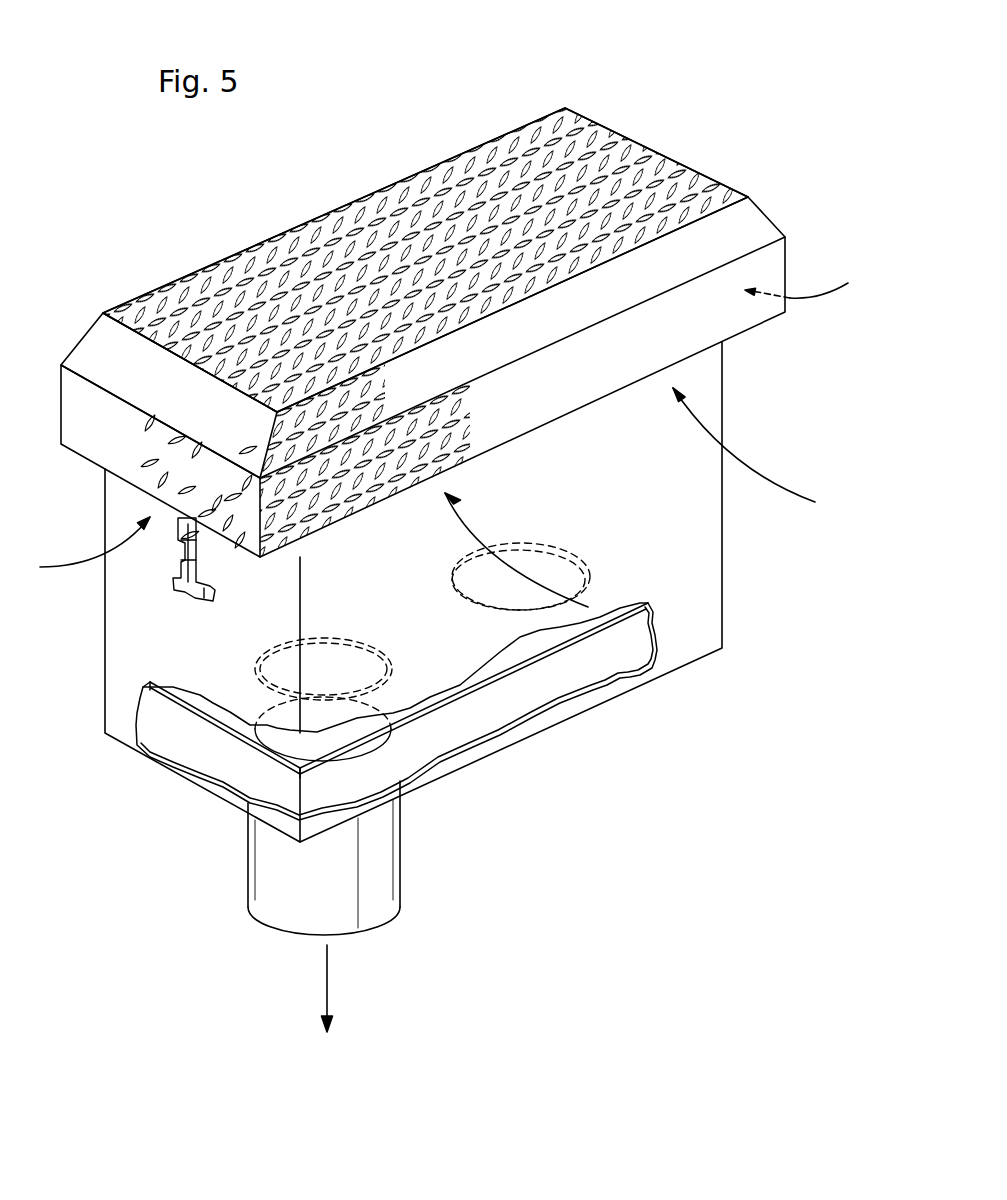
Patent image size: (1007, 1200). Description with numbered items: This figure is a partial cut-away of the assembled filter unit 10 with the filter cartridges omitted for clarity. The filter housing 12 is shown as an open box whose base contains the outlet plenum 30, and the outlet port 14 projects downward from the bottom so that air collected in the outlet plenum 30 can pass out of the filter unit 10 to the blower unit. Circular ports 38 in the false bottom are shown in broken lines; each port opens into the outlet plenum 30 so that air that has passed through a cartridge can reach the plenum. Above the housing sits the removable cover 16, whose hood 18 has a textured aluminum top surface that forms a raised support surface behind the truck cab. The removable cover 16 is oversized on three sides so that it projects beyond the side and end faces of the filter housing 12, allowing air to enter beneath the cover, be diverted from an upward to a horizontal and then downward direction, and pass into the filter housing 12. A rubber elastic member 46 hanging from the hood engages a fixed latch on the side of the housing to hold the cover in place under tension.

The filter unit 10 is at (444, 528).
The filter housing 12 is at (690, 569).
The outlet port 14 is at (378, 852).
The removable cover 16 is at (443, 290).
The hood 18 is at (572, 122).
The outlet plenum 30 is at (490, 712).
The circular port 38 is at (338, 646).
The elastic member 46 is at (190, 600).